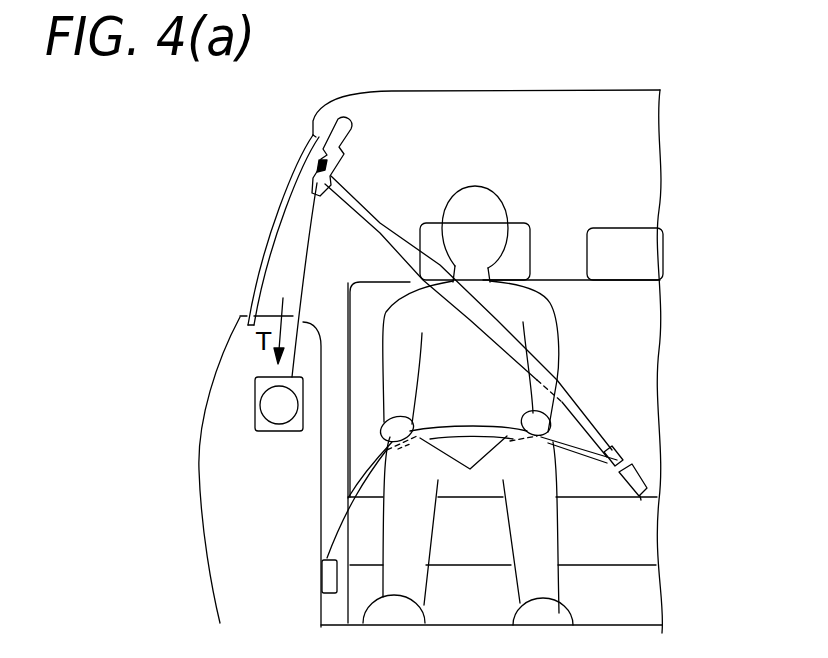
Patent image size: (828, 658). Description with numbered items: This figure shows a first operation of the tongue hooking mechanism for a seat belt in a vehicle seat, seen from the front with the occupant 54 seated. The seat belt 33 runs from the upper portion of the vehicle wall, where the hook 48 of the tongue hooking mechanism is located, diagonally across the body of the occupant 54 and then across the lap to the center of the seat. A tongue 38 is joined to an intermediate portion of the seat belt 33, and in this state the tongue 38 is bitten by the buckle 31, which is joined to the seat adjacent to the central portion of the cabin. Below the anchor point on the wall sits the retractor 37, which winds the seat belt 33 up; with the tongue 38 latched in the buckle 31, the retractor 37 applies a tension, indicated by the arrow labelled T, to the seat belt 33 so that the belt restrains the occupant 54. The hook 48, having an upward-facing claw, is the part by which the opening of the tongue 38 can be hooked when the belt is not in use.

The buckle 31 is at (637, 478).
The seat belt 33 is at (300, 276).
The retractor 37 is at (255, 411).
The tongue 38 is at (624, 460).
The hook 48 is at (340, 144).
The occupant 54 is at (543, 312).